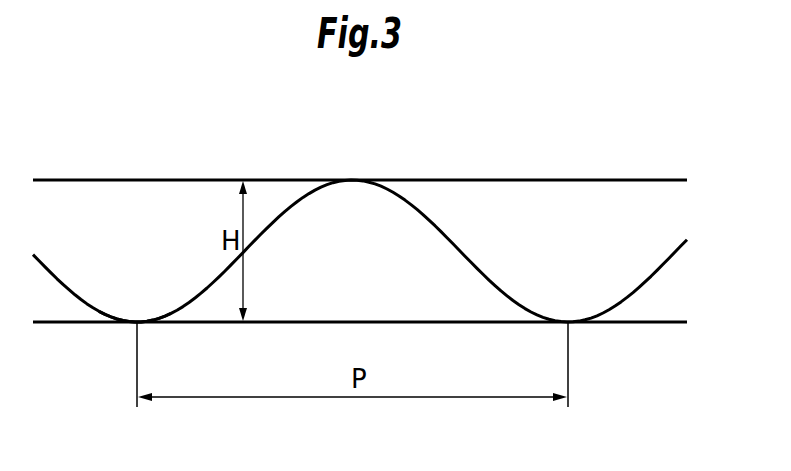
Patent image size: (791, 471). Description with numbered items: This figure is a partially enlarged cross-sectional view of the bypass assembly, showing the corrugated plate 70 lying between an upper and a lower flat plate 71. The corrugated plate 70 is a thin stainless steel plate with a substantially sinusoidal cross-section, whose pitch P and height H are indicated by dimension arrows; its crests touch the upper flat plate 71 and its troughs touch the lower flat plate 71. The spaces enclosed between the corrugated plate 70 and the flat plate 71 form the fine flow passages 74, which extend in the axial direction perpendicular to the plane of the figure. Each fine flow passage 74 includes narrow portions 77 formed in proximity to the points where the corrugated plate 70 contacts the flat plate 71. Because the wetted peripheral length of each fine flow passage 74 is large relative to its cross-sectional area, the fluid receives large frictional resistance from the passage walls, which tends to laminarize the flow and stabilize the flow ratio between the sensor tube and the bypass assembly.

The corrugated plate 70 is at (442, 243).
The flat plate 71 is at (662, 178).
The fine flow passage 74 is at (121, 215).
The narrow portion 77 is at (305, 186).